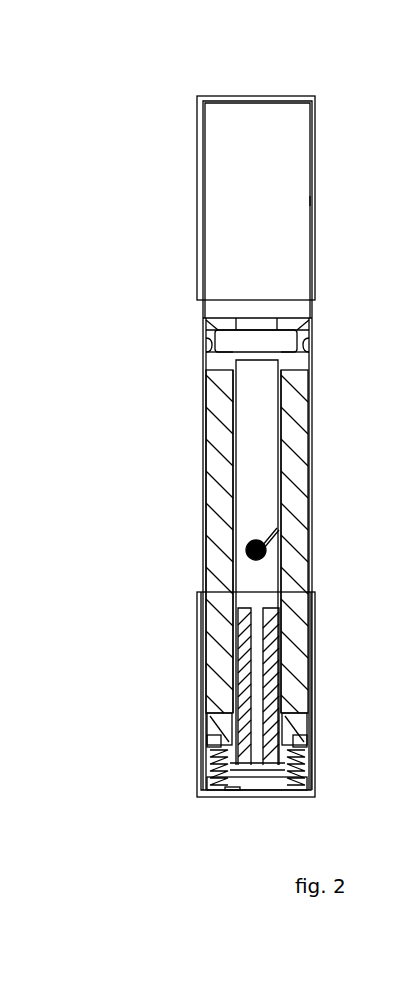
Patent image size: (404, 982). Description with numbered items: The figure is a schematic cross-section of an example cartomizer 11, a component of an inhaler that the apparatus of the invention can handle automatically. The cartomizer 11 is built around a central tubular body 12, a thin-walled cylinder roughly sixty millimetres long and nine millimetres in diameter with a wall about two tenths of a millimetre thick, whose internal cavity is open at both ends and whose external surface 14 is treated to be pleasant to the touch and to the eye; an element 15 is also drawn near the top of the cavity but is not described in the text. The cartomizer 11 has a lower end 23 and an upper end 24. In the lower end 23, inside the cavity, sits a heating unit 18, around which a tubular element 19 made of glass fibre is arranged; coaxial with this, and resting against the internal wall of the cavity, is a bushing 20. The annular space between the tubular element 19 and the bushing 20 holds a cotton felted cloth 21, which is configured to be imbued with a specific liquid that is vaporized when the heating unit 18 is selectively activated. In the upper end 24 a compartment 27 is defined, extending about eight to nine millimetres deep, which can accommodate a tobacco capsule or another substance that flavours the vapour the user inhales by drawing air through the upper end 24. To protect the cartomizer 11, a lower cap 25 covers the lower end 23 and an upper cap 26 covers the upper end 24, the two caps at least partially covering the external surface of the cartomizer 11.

The cartomizer 11 is at (180, 73).
The central tubular body 12 is at (158, 446).
The external surface 14 is at (310, 417).
The seal holder 15 is at (297, 323).
The heating unit 18 is at (162, 663).
The tubular element 19 is at (280, 366).
The bushing 20 is at (293, 557).
The cotton felted cloth 21 is at (280, 465).
The lower end 23 is at (340, 695).
The upper end 24 is at (175, 156).
The lower cap 25 is at (193, 729).
The upper cap 26 is at (314, 142).
The compartment 27 is at (306, 201).